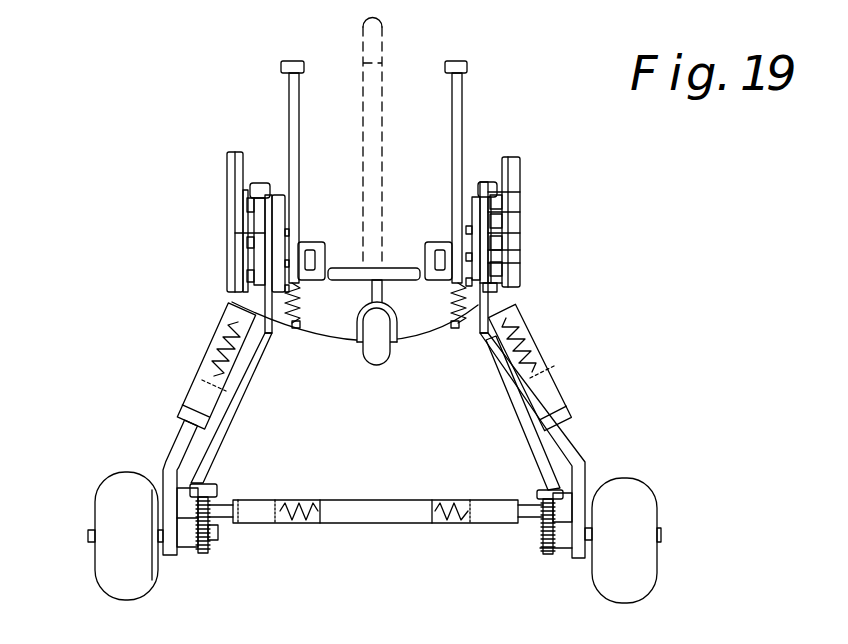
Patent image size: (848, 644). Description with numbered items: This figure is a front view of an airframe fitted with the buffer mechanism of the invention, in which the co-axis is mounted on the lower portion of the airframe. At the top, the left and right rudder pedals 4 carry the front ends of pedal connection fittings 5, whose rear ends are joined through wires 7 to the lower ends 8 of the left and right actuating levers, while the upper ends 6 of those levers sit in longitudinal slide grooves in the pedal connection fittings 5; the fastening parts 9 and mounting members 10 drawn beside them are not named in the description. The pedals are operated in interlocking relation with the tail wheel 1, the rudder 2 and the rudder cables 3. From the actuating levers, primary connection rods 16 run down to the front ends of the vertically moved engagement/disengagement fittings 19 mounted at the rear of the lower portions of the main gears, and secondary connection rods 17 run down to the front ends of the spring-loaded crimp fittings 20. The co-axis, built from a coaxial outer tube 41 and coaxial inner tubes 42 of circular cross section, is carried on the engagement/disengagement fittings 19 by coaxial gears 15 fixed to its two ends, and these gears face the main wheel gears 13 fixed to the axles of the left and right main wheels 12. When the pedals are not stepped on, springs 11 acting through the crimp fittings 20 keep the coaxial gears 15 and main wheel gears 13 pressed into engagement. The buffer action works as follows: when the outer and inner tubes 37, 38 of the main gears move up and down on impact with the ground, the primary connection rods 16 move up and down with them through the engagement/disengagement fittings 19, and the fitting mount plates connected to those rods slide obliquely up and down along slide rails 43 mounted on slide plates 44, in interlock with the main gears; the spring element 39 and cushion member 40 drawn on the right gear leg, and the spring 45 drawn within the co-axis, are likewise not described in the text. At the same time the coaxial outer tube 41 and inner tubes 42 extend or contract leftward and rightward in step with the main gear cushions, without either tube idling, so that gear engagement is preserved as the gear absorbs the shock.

The tail wheel 1 is at (383, 355).
The rudder 2 is at (383, 128).
The rudder cables 3 is at (423, 282).
The rudder pedals 4 is at (428, 242).
The pedal connection fittings 5 is at (518, 166).
The upper ends of actuating levers 6 is at (520, 203).
The wires 7 is at (520, 223).
The lower ends of actuating levers 8 is at (505, 310).
The nut 9 is at (520, 248).
The bolt 10 is at (497, 300).
The springs 11 is at (300, 303).
The main wheels 12 is at (125, 580).
The main wheel gears 13 is at (208, 553).
The coaxial gears 15 is at (218, 496).
The primary connection rods 16 is at (243, 398).
The secondary connection rods 17 is at (225, 447).
The engagement/disengagement fittings 19 is at (595, 500).
The spring-loaded crimp fittings 20 is at (540, 520).
The outer tubes 37 is at (565, 402).
The inner tubes 38 is at (556, 420).
The spring 39 is at (537, 345).
The cylinder 40 is at (545, 380).
The coaxial outer tube 41 is at (397, 523).
The coaxial inner tubes 42 is at (257, 513).
The slide rails 43 is at (238, 158).
The slide plates 44 is at (228, 157).
The spring 45 is at (455, 500).